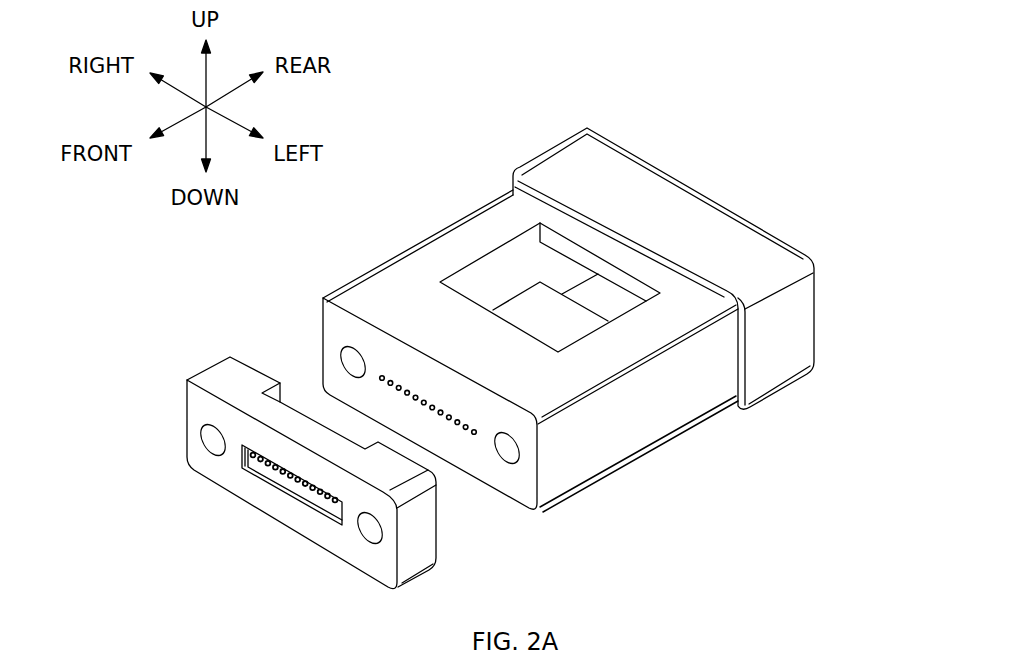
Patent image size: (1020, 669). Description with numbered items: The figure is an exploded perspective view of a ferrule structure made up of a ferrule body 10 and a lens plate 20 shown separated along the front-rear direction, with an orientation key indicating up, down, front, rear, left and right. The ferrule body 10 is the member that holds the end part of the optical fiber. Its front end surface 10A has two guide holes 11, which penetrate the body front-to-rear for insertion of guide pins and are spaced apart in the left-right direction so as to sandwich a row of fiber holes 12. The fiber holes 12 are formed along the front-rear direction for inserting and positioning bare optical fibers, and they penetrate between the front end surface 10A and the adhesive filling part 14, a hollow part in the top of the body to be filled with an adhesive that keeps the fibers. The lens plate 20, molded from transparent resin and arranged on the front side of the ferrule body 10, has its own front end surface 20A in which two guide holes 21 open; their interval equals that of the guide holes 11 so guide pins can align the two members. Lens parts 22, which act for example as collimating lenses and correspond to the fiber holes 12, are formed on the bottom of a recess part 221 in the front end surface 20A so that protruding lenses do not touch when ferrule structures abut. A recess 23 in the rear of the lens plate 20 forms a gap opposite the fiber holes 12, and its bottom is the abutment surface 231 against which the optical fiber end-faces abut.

The ferrule body 10 is at (427, 198).
The front end surface 10A is at (336, 330).
The guide holes 11 is at (353, 362).
The fiber holes 12 is at (466, 430).
The adhesive filling part 14 is at (508, 257).
The lens plate 20 is at (168, 347).
The front end surface 20A is at (196, 410).
The guide holes 21 is at (212, 442).
The lens parts 22 is at (275, 468).
The recess part 221 is at (243, 480).
The recess 23 is at (267, 375).
The abutment surface 231 is at (283, 385).